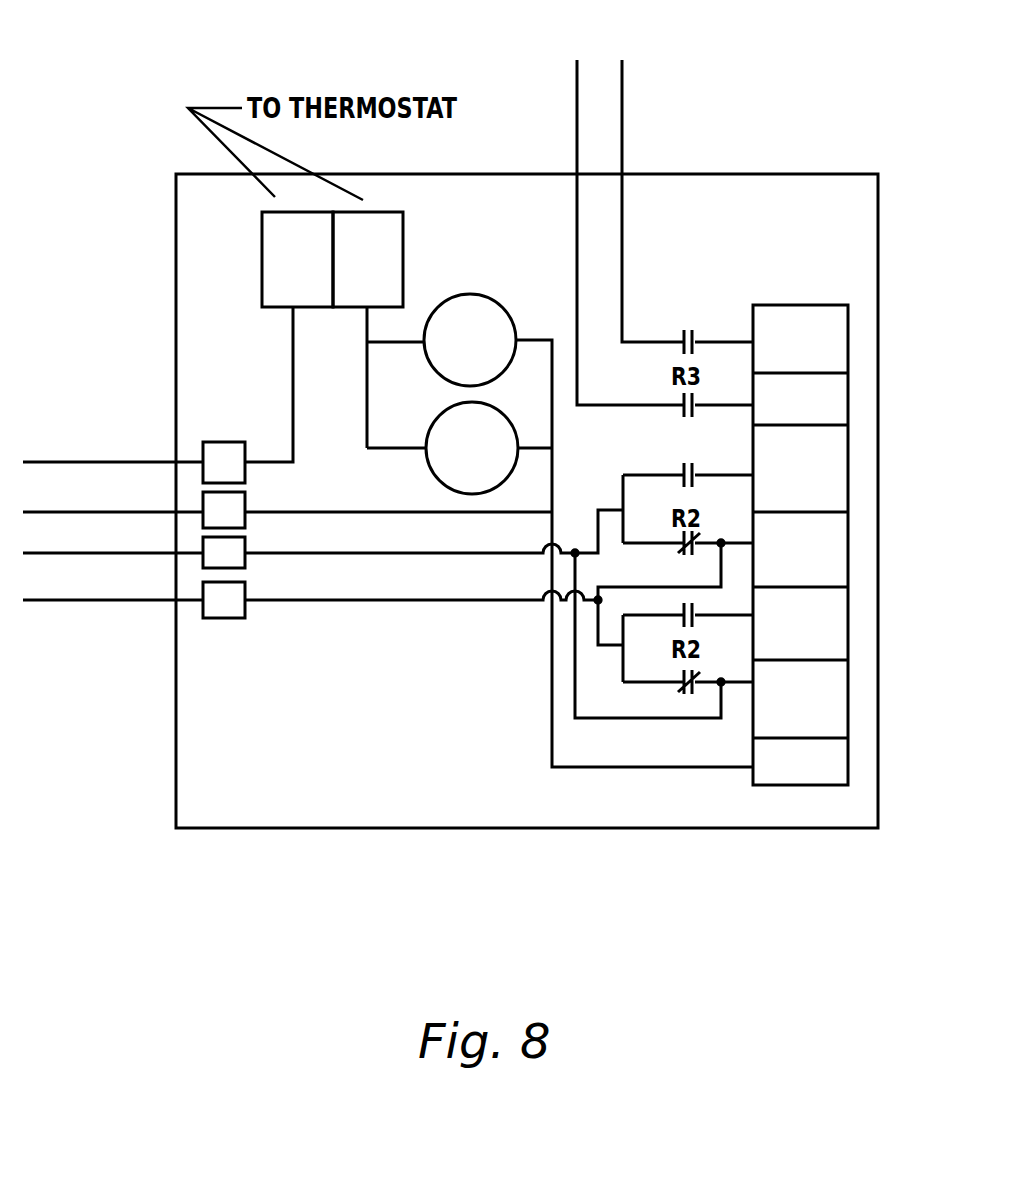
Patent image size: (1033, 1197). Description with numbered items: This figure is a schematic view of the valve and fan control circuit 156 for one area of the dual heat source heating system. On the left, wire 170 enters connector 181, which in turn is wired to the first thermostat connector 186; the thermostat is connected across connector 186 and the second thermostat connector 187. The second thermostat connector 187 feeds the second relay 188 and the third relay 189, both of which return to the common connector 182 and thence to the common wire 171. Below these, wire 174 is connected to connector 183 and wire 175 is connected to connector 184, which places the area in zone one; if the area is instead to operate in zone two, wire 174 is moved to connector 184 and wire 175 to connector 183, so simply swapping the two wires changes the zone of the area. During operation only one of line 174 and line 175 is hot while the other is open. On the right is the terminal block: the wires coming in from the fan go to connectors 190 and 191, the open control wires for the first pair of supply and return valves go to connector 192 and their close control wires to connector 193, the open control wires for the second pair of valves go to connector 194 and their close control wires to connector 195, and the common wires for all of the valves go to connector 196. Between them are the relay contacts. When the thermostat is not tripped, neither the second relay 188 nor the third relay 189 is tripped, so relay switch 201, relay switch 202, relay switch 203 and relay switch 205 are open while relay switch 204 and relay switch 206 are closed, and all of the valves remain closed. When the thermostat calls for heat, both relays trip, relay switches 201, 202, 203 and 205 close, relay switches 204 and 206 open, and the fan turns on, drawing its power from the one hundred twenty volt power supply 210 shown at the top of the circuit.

The valve and fan control circuit 156 is at (527, 487).
The wire 170 is at (113, 451).
The common wire 171 is at (113, 501).
The wire 174 is at (113, 541).
The wire 175 is at (113, 589).
The connector 181 is at (236, 444).
The common connector 182 is at (254, 504).
The connector 183 is at (252, 548).
The connector 184 is at (252, 595).
The first thermostat connector 186 is at (264, 267).
The second thermostat connector 187 is at (398, 259).
The relay R2 188 is at (481, 442).
The relay R3 189 is at (489, 336).
The connector 190 is at (839, 534).
The connector 191 is at (839, 375).
The connector 192 is at (839, 473).
The connector 193 is at (839, 550).
The connector 194 is at (839, 625).
The connector 195 is at (839, 700).
The connector 196 is at (843, 769).
The relay switch 201 is at (718, 320).
The relay switch 202 is at (687, 425).
The relay switch 203 is at (688, 461).
The relay switch 204 is at (669, 558).
The relay switch 205 is at (688, 610).
The relay switch 206 is at (669, 695).
The 120 volt power supply 210 is at (632, 232).